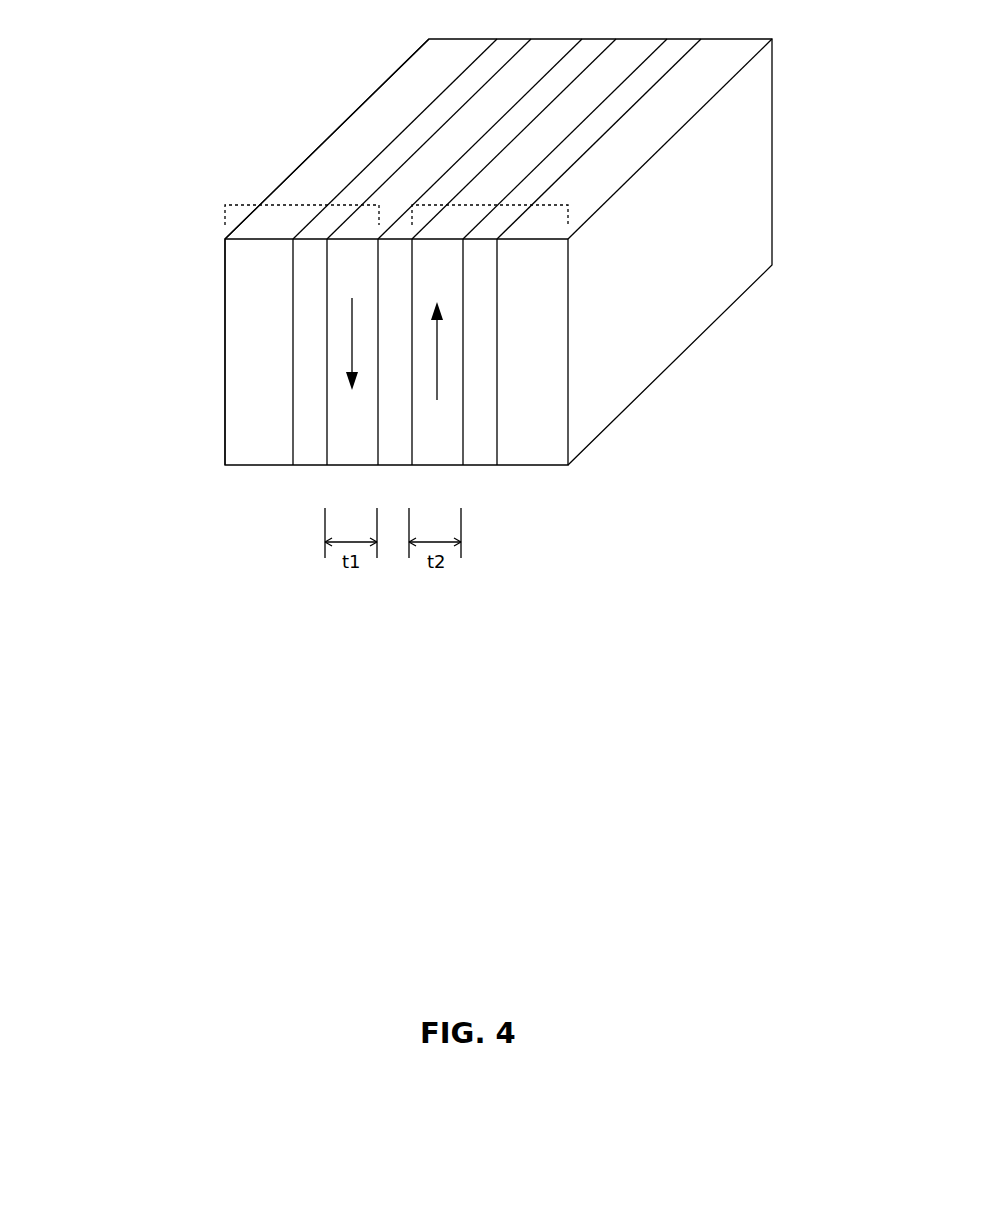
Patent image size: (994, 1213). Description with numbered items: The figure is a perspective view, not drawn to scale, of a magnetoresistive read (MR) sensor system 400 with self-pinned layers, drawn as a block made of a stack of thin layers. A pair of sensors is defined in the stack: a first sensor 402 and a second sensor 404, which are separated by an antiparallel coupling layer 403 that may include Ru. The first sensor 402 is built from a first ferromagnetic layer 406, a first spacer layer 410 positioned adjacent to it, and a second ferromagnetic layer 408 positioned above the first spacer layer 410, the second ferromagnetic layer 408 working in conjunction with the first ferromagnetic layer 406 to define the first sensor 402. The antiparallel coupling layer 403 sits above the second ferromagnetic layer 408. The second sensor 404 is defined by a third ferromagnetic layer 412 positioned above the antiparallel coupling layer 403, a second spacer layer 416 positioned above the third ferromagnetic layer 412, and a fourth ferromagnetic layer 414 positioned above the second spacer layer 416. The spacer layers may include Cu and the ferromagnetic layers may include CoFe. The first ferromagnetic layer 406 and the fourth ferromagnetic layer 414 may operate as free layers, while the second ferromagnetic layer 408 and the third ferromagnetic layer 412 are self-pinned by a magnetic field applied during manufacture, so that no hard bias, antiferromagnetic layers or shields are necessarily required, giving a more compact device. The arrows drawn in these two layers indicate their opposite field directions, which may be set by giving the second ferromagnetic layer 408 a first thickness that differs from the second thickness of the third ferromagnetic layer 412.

The magnetoresistive read (MR) sensor system 400 is at (100, 191).
The first sensor 402 is at (317, 203).
The antiparallel coupling layer 403 is at (392, 512).
The second sensor 404 is at (492, 207).
The first ferromagnetic layer 406 is at (252, 307).
The second ferromagnetic layer 408 is at (345, 267).
The first spacer layer 410 is at (300, 497).
The third ferromagnetic layer 412 is at (447, 273).
The fourth ferromagnetic layer 414 is at (520, 318).
The second spacer layer 416 is at (491, 503).